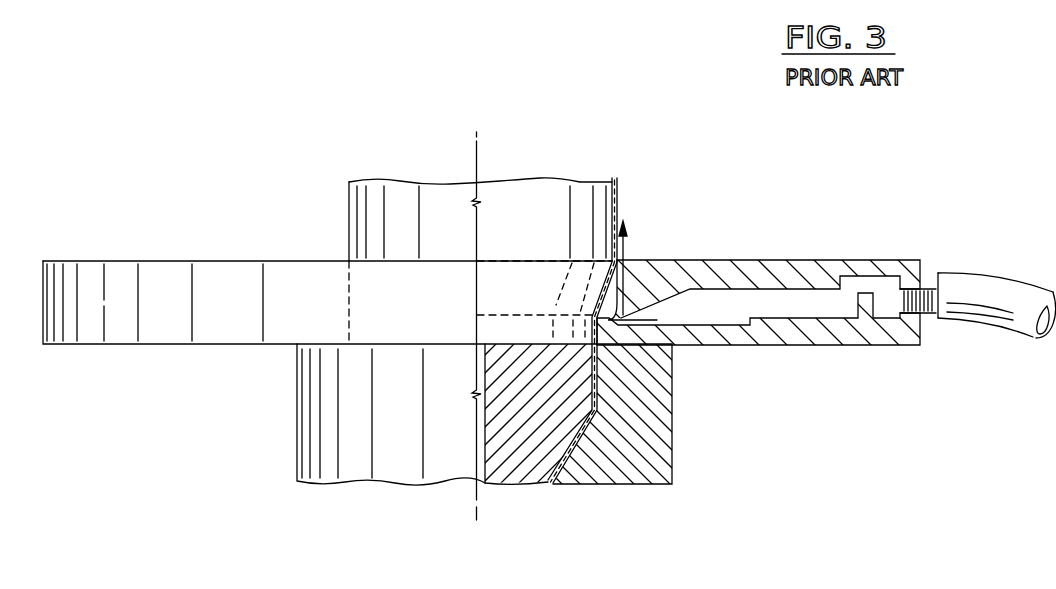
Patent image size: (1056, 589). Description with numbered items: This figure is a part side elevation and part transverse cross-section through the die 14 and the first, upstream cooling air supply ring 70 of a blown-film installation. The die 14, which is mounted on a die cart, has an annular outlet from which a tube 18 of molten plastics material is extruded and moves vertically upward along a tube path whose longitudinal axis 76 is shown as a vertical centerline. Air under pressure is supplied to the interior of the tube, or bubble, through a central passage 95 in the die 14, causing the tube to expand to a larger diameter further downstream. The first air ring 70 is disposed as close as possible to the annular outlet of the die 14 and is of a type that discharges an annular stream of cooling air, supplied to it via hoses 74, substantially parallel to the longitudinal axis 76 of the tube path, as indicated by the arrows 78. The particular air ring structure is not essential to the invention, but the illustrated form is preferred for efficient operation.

The longitudinal axis 76 is at (479, 152).
The tube 18 is at (617, 185).
The arrows 78 is at (623, 247).
The first cooling air supply ring 70 is at (693, 275).
The hoses 74 is at (993, 318).
The die 14 is at (672, 430).
The central passage 95 is at (497, 468).